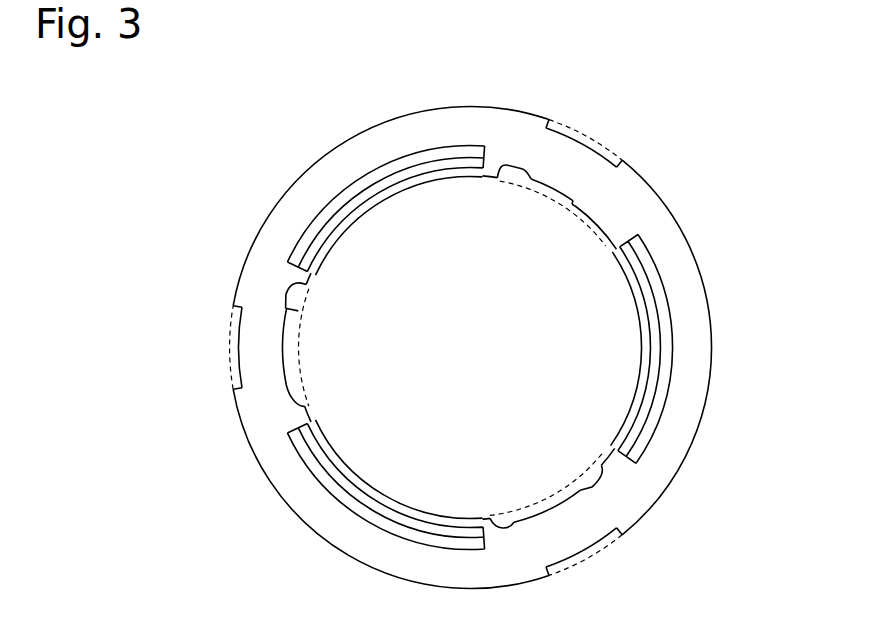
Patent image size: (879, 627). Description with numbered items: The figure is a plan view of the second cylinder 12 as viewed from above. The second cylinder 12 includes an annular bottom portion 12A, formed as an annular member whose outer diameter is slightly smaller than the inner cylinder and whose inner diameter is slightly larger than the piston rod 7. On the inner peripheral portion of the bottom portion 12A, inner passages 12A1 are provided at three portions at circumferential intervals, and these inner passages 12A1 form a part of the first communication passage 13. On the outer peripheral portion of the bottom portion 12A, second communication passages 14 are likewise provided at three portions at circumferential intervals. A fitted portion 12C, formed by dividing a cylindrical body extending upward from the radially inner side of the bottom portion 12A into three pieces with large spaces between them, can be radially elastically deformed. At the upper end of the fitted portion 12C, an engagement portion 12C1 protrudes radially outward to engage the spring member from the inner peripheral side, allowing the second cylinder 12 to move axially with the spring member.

The piston rod 7 is at (282, 385).
The second cylinder 12 is at (672, 211).
The bottom portion 12A is at (684, 309).
The inner passage 12A1 is at (577, 196).
The fitted portion 12C is at (345, 478).
The engagement portion 12C1 is at (345, 198).
The first communication passage 13 is at (541, 190).
The second communication passage 14 is at (578, 130).